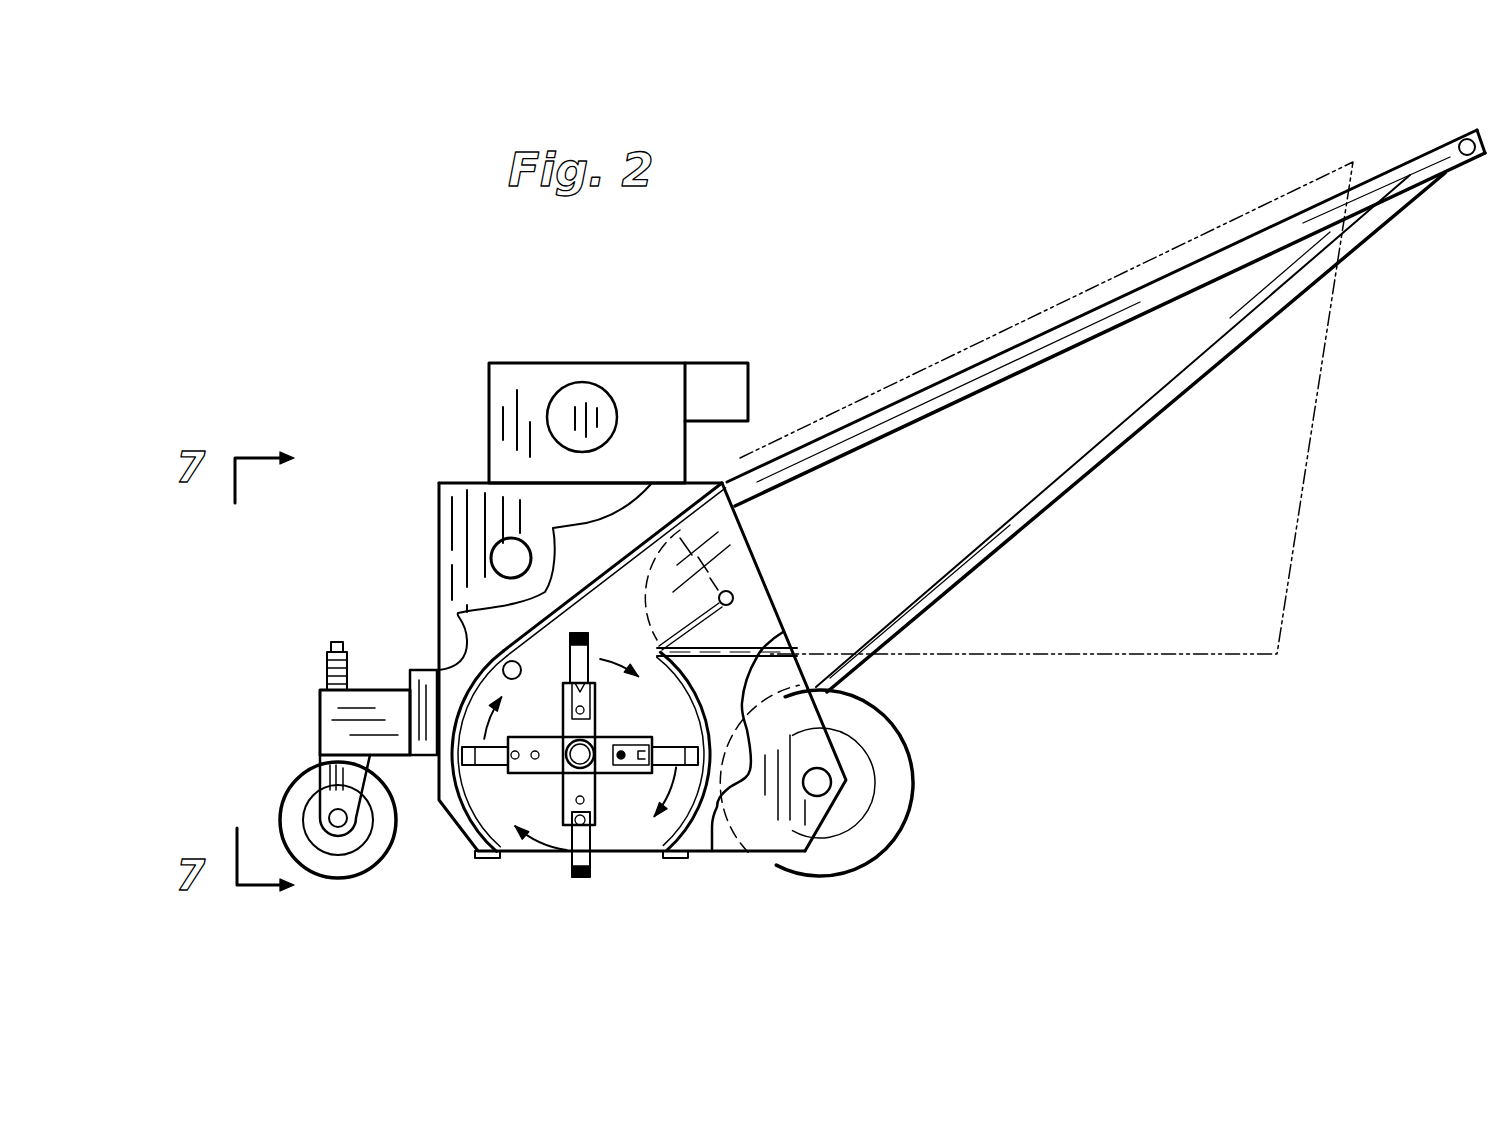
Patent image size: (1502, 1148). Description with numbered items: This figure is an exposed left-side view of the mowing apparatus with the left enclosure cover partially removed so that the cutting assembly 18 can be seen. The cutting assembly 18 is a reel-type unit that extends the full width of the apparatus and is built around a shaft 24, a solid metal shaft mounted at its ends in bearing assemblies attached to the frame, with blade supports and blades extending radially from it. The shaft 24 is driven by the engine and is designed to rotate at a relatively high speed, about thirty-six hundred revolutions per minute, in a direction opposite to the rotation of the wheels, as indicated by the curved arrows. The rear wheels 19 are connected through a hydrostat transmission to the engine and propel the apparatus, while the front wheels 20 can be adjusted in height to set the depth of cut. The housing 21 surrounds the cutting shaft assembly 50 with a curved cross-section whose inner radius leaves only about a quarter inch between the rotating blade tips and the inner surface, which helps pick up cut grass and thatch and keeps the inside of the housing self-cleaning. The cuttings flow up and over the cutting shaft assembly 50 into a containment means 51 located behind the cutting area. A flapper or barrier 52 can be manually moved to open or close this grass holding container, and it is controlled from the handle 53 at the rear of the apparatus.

The cutting assembly 18 is at (590, 807).
The rear wheels 19 is at (913, 783).
The front wheels 20 is at (385, 852).
The housing 21 is at (438, 543).
The shaft 24 is at (598, 773).
The cutting shaft assembly 50 is at (620, 565).
The containment means 51 is at (975, 472).
The flapper or barrier 52 is at (733, 594).
The handle 53 is at (1461, 139).